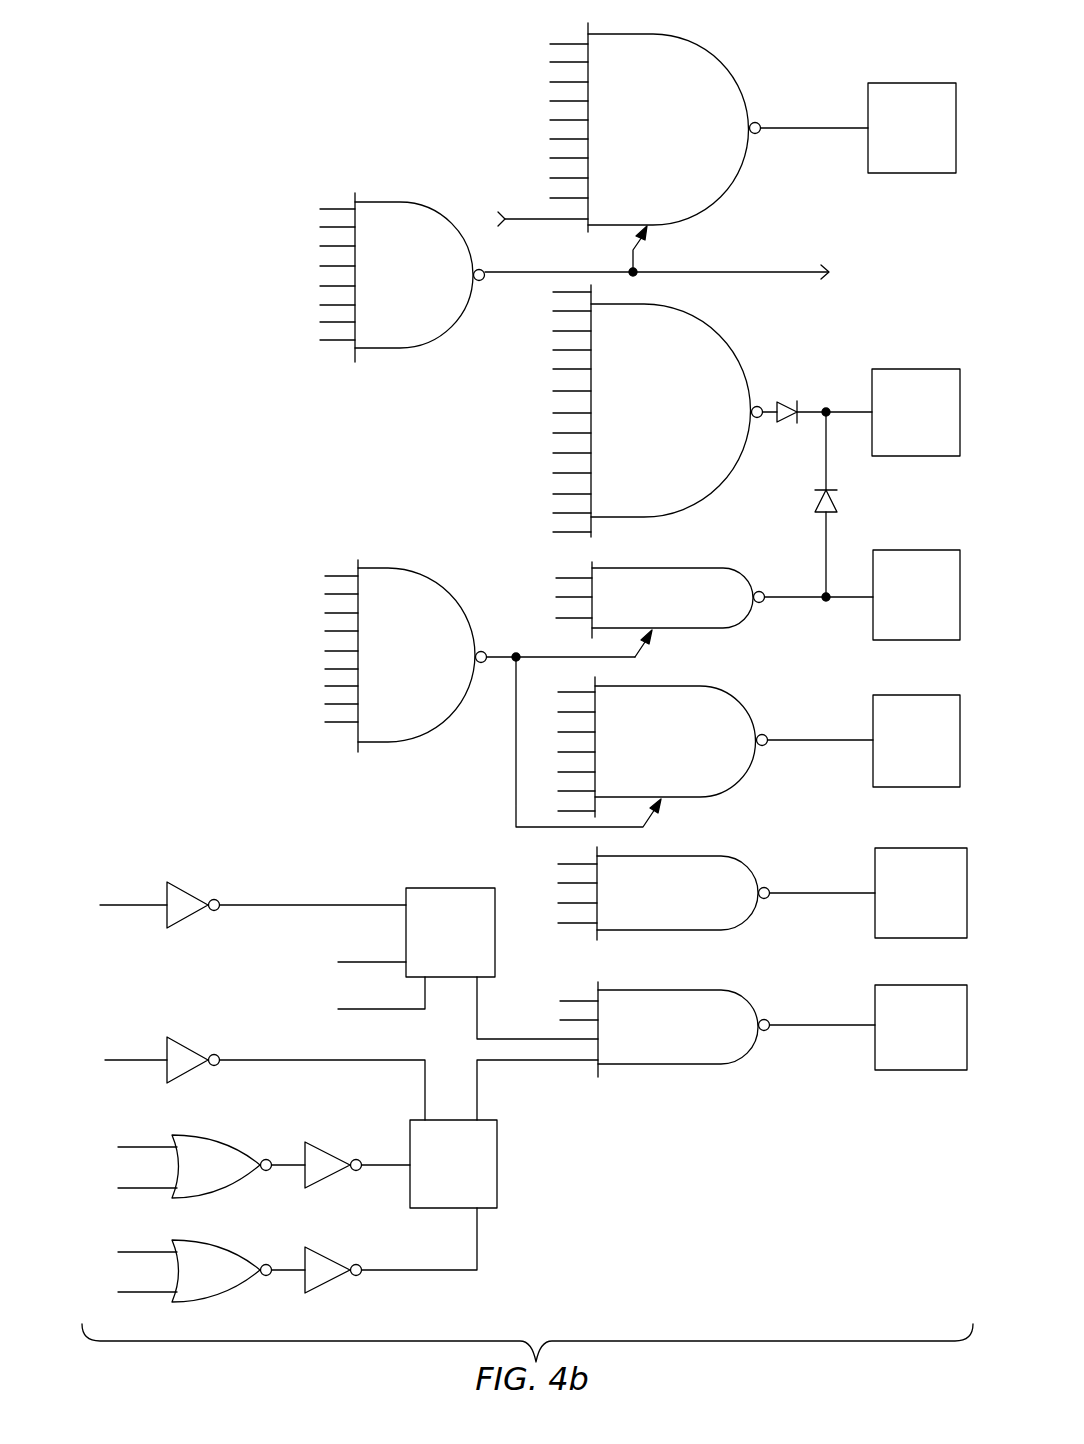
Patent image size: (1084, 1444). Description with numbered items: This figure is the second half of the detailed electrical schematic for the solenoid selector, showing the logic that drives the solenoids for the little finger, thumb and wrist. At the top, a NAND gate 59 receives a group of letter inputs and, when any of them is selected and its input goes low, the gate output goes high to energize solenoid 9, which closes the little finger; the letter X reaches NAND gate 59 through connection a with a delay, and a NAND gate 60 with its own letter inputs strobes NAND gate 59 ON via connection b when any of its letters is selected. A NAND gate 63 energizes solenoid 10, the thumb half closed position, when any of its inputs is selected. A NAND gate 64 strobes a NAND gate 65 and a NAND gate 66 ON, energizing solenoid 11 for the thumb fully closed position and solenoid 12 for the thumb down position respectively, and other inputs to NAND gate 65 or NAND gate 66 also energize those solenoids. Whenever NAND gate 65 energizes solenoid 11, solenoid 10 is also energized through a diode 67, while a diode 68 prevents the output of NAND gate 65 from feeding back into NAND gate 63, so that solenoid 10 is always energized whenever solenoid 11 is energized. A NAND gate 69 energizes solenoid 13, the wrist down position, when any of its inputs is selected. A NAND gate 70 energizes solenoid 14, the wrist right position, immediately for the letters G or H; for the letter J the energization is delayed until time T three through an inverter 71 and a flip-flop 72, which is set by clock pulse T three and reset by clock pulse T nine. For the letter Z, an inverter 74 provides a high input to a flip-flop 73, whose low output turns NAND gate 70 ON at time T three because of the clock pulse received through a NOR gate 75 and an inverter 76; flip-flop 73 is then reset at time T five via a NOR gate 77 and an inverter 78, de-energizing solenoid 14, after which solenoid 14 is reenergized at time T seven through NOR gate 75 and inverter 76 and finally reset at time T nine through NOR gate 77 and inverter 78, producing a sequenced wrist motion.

The solenoid 9 is at (905, 133).
The solenoid 10 is at (904, 419).
The solenoid 11 is at (905, 601).
The solenoid 12 is at (904, 747).
The solenoid 13 is at (908, 899).
The solenoid 14 is at (908, 1035).
The NAND gate 59 is at (641, 141).
The NAND gate 60 is at (389, 287).
The NAND gate 63 is at (632, 424).
The NAND gate 64 is at (394, 669).
The NAND gate 65 is at (639, 609).
The NAND gate 66 is at (642, 752).
The diode 67 is at (815, 504).
The diode 68 is at (782, 401).
The NAND gate 69 is at (642, 905).
The NAND gate 70 is at (642, 1037).
The inverter 71 is at (186, 893).
The flip-flop 72 is at (437, 945).
The flip-flop 73 is at (440, 1175).
The inverter 74 is at (188, 1048).
The NOR gate 75 is at (197, 1177).
The inverter 76 is at (325, 1153).
The NOR gate 77 is at (199, 1282).
The inverter 78 is at (325, 1258).